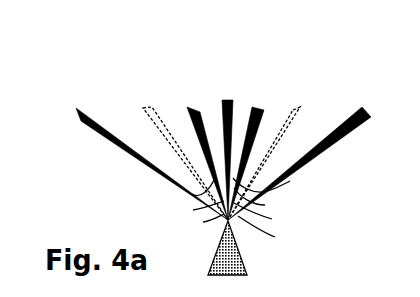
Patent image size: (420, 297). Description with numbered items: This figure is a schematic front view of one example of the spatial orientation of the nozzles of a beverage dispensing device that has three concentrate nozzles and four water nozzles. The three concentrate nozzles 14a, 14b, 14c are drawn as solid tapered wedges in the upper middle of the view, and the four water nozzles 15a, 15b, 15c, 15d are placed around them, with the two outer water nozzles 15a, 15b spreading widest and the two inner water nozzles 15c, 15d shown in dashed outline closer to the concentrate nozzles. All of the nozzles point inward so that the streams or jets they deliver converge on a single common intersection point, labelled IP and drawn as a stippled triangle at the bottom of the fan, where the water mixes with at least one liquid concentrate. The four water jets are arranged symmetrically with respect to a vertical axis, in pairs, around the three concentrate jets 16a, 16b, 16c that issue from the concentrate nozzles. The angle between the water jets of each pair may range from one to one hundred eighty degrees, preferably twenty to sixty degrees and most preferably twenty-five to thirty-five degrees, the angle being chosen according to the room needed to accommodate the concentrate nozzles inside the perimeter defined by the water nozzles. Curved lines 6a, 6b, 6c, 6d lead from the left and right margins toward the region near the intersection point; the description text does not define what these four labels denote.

The water nozzle 15a is at (96, 122).
The water nozzle 15b is at (350, 116).
The water nozzle 15c is at (148, 123).
The water nozzle 15d is at (296, 125).
The concentrate nozzle 14a is at (191, 112).
The concentrate nozzle 14b is at (261, 112).
The concentrate nozzle 14c is at (226, 105).
The concentrate jet 16a is at (192, 194).
The concentrate jet 16b is at (265, 205).
The concentrate jet 16c is at (290, 181).
The surface 6a is at (203, 222).
The surface 6b is at (275, 237).
The surface 6c is at (193, 210).
The surface 6d is at (272, 219).
The image point IP is at (241, 230).